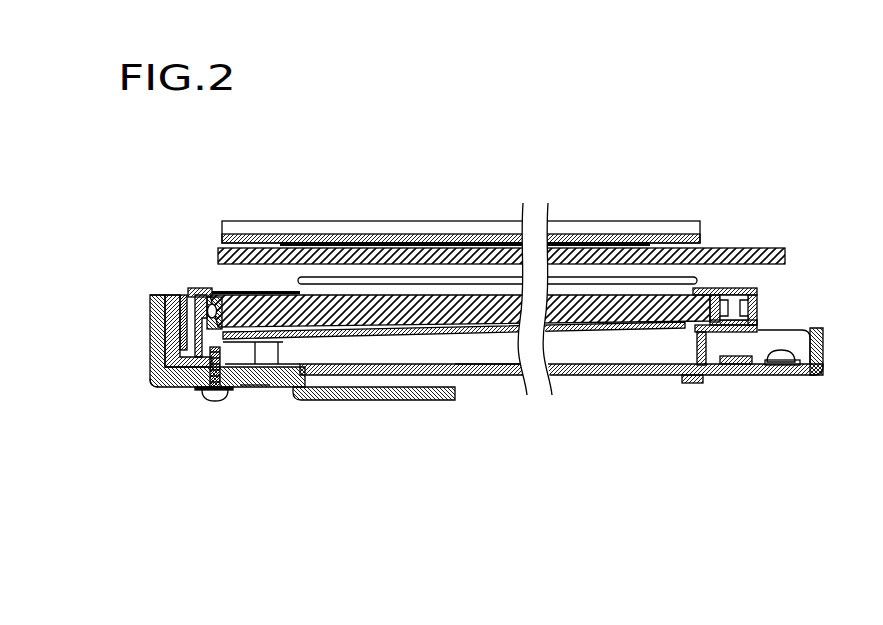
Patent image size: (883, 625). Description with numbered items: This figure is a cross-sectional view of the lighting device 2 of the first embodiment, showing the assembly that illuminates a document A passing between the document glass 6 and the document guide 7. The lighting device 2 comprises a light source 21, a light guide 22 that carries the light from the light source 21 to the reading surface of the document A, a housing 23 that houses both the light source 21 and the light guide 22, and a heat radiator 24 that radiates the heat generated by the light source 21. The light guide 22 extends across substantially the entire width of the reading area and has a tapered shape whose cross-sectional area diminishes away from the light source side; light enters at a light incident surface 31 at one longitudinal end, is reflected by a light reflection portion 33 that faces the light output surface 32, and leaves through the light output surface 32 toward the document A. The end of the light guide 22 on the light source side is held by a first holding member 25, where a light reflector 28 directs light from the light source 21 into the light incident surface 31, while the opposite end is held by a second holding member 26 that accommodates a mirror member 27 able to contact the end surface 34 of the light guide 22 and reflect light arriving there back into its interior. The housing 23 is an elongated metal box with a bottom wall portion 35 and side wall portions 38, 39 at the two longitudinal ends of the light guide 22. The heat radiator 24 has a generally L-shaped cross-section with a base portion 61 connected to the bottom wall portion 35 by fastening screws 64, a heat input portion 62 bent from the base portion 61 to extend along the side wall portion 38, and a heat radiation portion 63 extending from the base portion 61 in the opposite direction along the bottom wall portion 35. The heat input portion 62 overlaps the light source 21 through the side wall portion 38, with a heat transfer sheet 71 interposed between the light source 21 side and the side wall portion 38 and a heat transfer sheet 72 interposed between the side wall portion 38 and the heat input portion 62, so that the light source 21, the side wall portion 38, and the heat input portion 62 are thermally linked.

The lighting device 2 is at (561, 399).
The document glass 6 is at (728, 247).
The document guide 7 is at (625, 220).
The document A is at (385, 242).
The light source 21 is at (182, 310).
The light guide 22 is at (386, 323).
The housing 23 is at (482, 380).
The heat radiator 24 is at (275, 407).
The first holding member 25 is at (197, 293).
The second holding member 26 is at (758, 305).
The mirror member 27 is at (718, 290).
The light reflector 28 is at (192, 300).
The light incident surface 31 is at (206, 288).
The light output surface 32 is at (300, 295).
The light reflection portion 33 is at (330, 332).
The end surface 34 is at (732, 305).
The bottom wall portion 35 is at (578, 376).
The side wall portion 38 is at (158, 342).
The side wall portion 39 is at (815, 328).
The base portion 61 is at (255, 390).
The heat input portion 62 is at (157, 293).
The heat radiation portion 63 is at (340, 401).
The fastening screws 64 is at (214, 403).
The heat transfer sheet 71 is at (166, 326).
The heat transfer sheet 72 is at (152, 370).